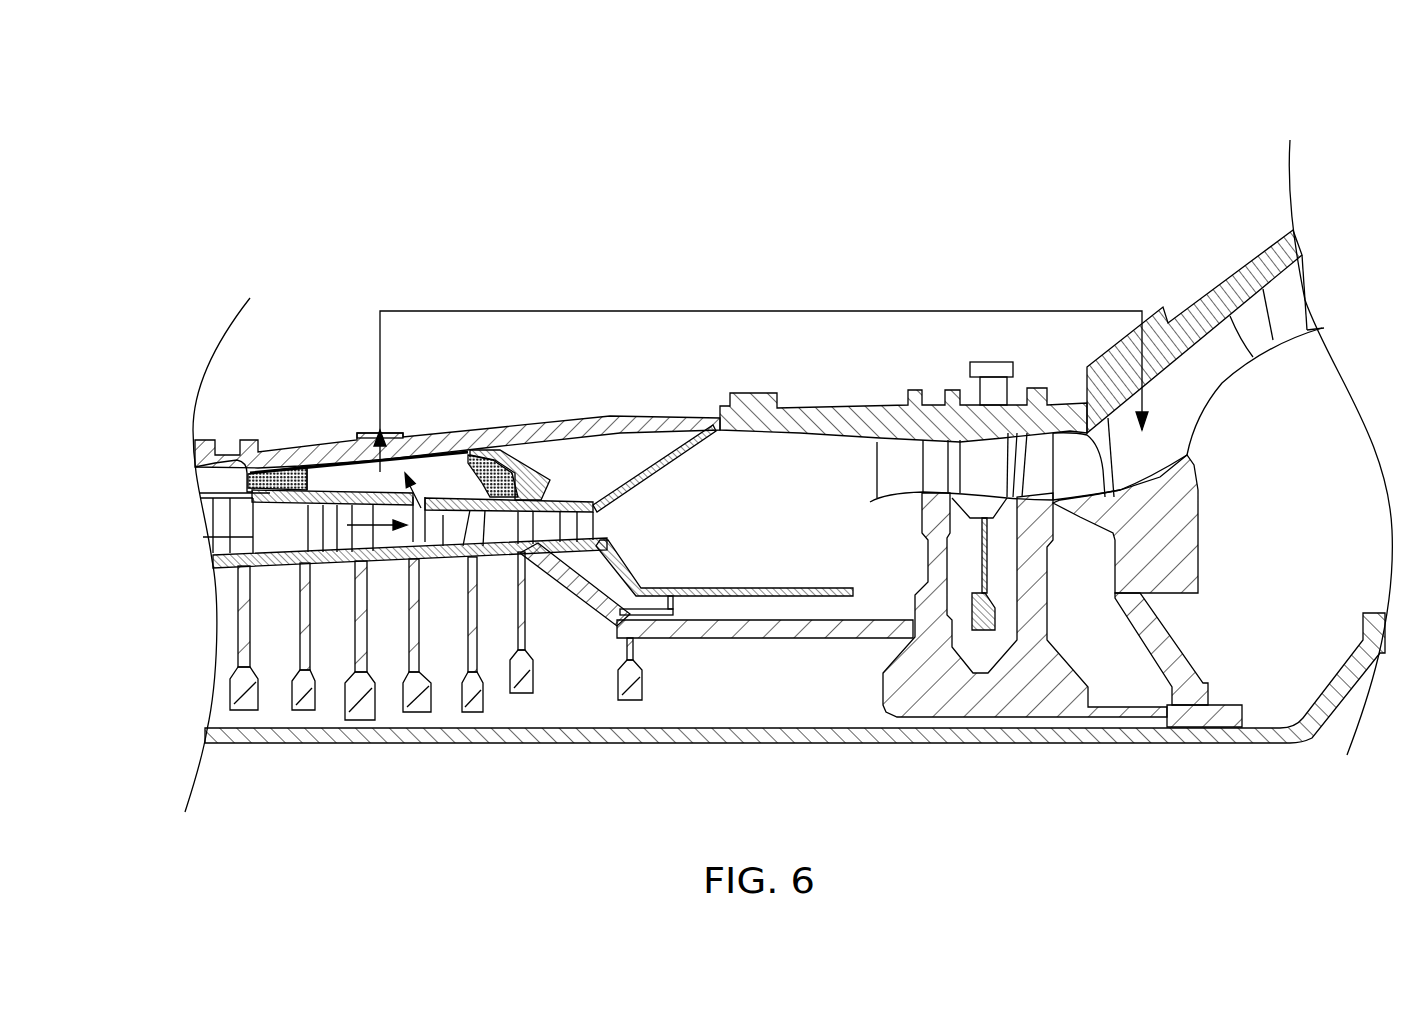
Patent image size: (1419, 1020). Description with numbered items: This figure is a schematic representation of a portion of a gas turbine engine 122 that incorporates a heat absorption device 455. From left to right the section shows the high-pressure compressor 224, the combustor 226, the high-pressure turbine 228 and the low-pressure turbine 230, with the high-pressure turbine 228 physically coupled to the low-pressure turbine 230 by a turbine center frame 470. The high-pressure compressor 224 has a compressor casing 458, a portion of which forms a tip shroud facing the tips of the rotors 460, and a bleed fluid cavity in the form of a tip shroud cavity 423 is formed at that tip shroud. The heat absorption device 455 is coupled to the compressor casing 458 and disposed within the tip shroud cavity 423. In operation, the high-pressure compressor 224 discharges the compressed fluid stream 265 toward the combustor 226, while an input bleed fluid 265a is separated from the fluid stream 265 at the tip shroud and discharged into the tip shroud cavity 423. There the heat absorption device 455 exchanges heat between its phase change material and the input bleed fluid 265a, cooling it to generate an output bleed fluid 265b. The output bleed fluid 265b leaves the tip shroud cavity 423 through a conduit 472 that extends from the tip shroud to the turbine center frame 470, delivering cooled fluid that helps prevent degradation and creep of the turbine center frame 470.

The gas turbine engine 122 is at (247, 102).
The high-pressure compressor 224 is at (226, 608).
The combustor 226 is at (795, 517).
The high-pressure turbine 228 is at (1007, 614).
The low-pressure turbine 230 is at (1258, 338).
The compressed fluid stream 265 is at (367, 520).
The input bleed fluid 265a is at (427, 462).
The output bleed fluid 265b is at (375, 428).
The tip shroud cavity 423 is at (213, 480).
The heat absorption device 455 is at (311, 477).
The compressor casing 458 is at (400, 443).
The rotors 460 is at (273, 525).
The turbine center frame 470 is at (1202, 383).
The conduit 472 is at (865, 310).